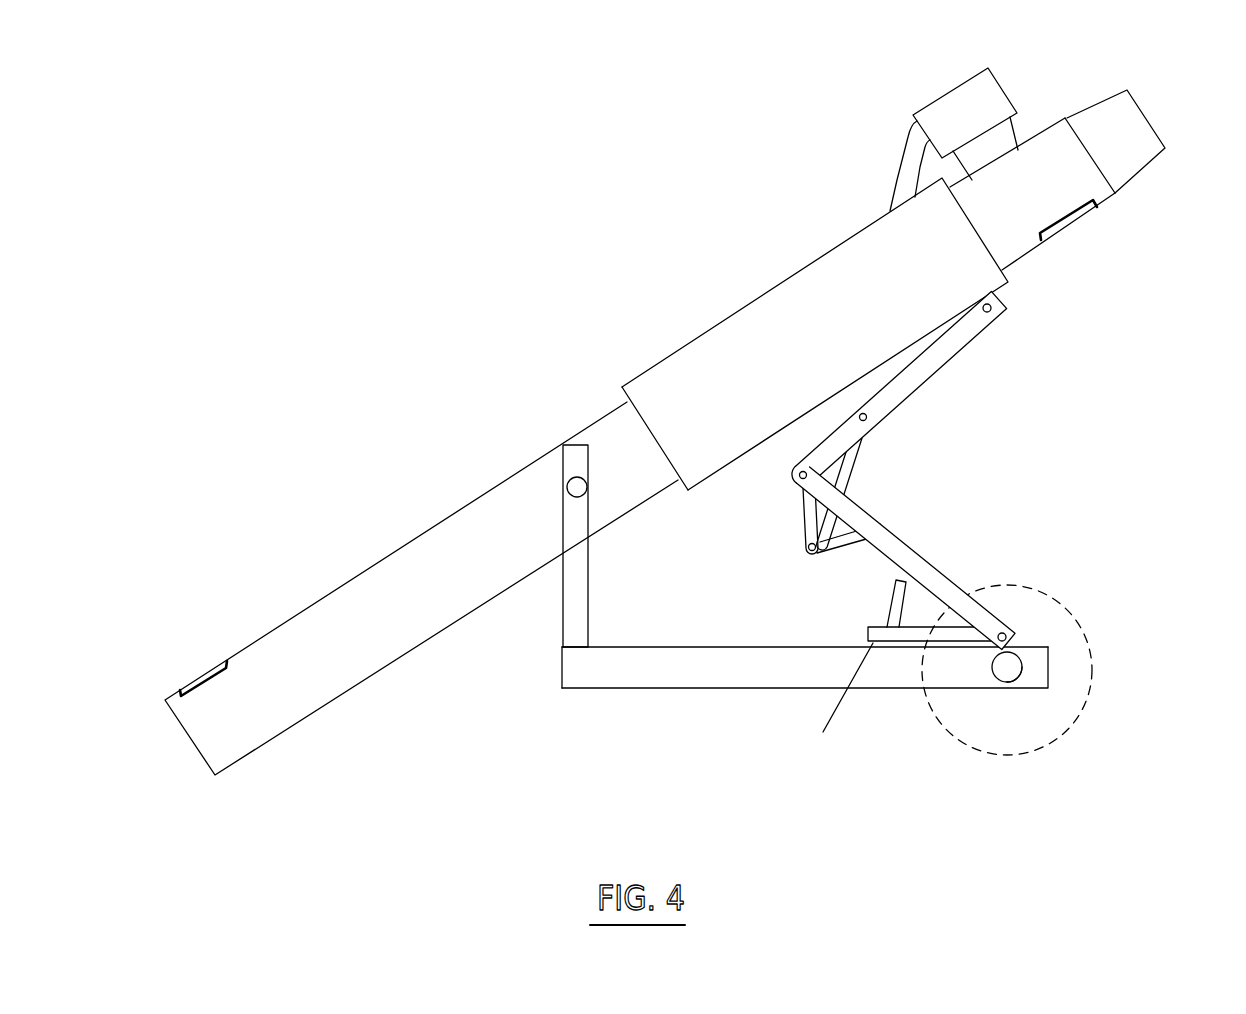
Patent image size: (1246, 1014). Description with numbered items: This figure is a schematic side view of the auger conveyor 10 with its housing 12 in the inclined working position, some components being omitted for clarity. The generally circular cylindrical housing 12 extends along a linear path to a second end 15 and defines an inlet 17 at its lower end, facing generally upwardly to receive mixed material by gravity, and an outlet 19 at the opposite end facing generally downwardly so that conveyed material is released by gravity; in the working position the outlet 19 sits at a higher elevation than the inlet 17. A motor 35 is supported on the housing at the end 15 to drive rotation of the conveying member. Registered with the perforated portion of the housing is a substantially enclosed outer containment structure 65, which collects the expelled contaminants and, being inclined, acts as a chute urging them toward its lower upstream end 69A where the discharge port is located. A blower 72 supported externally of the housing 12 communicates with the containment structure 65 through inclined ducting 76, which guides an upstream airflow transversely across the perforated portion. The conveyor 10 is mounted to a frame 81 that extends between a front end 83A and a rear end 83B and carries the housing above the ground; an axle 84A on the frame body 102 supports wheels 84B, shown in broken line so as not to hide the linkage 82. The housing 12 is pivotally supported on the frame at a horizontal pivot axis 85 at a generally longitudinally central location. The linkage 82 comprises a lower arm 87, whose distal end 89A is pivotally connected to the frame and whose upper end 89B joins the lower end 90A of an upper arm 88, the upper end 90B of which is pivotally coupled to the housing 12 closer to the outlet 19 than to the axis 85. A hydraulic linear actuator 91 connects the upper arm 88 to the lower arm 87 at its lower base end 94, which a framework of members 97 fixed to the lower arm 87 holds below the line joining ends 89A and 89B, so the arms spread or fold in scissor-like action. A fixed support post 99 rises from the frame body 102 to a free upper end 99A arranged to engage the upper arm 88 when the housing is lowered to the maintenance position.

The auger conveyor 10 is at (1068, 108).
The housing 12 is at (363, 573).
The second end 15 is at (1086, 146).
The inlet 17 is at (201, 659).
The outlet 19 is at (1091, 227).
The motor 35 is at (1142, 112).
The outer containment structure 65 is at (660, 362).
The lower upstream end 69A is at (622, 398).
The blower 72 is at (955, 85).
The ducting 76 is at (898, 155).
The frame 81 is at (650, 690).
The linkage 82 is at (923, 470).
The front end 83A is at (1050, 658).
The rear end 83B is at (558, 675).
The axle 84A is at (1022, 675).
The wheels 84B is at (1080, 625).
The pivot axis 85 is at (573, 480).
The lower arm 87 is at (920, 553).
The upper arm 88 is at (928, 375).
The distal end of lower arm 89A is at (1012, 625).
The upper end of lower arm 89B is at (793, 507).
The lower end of upper arm 90A is at (798, 452).
The upper end of upper arm 90B is at (1003, 297).
The linear actuator 91 is at (852, 480).
The lower base end 94 is at (817, 560).
The framework of members 97 is at (803, 548).
The support post 99 is at (900, 615).
The free upper end 99A is at (897, 580).
The frame body 102 is at (713, 673).